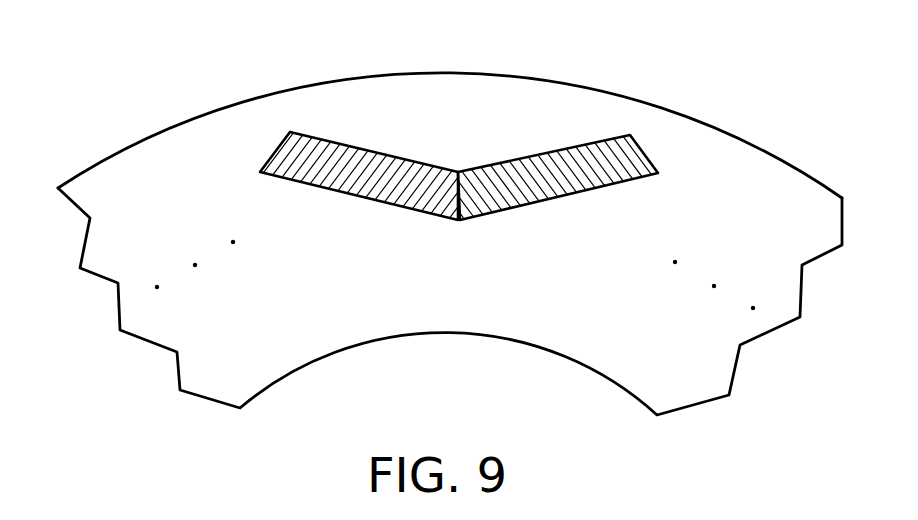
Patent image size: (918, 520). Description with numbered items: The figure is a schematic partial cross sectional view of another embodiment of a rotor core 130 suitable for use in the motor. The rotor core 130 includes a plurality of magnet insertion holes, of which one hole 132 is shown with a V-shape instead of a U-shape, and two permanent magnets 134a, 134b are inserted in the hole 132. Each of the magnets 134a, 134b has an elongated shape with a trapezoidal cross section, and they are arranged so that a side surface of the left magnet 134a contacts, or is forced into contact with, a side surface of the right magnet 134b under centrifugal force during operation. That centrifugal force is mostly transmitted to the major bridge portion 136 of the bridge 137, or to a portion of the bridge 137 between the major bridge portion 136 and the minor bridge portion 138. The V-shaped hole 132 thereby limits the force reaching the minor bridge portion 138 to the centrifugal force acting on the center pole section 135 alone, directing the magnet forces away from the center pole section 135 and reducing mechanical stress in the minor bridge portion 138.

The rotor core 130 is at (440, 217).
The magnet insertion hole 132 is at (456, 205).
The left permanent magnet 134a is at (378, 187).
The right permanent magnet 134b is at (535, 183).
The center pole section 135 is at (467, 102).
The major bridge portion 136 is at (254, 171).
The bridge 137 is at (253, 115).
The minor bridge portion 138 is at (278, 94).